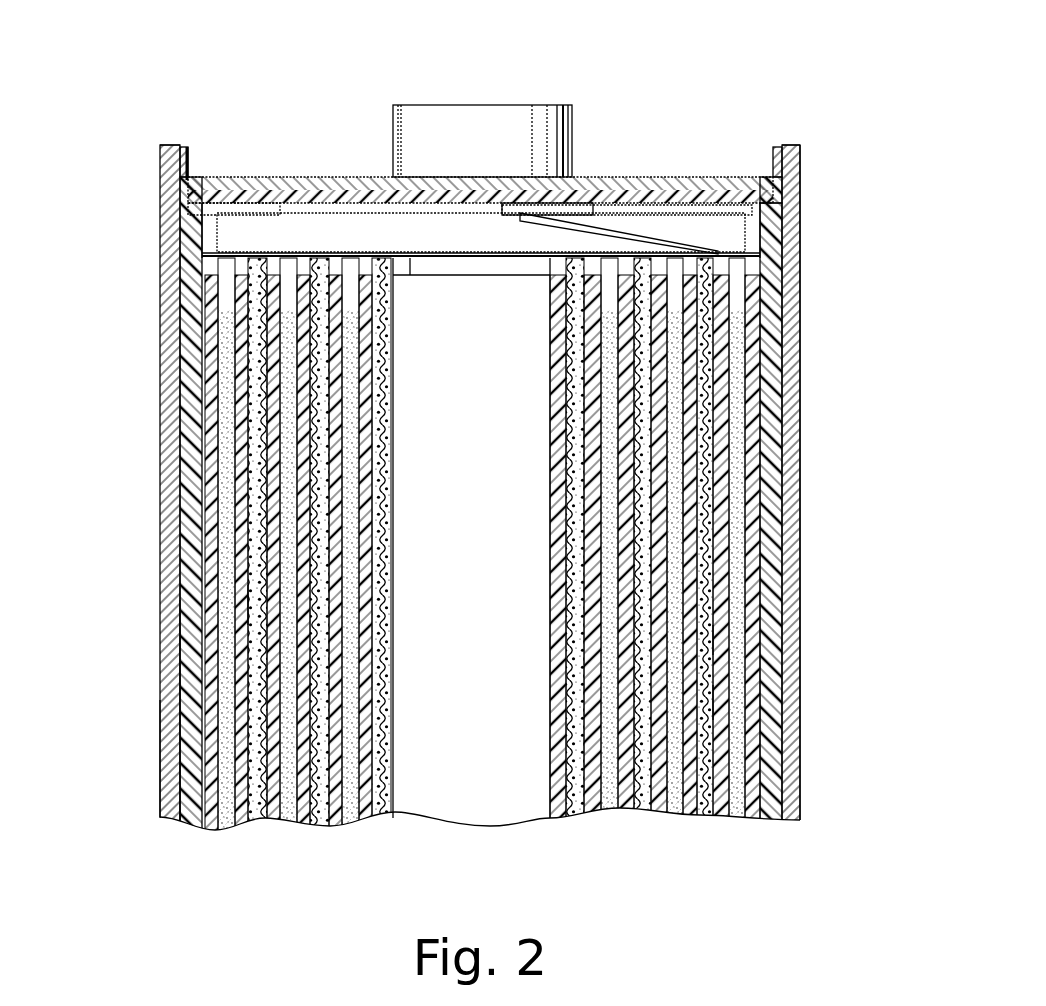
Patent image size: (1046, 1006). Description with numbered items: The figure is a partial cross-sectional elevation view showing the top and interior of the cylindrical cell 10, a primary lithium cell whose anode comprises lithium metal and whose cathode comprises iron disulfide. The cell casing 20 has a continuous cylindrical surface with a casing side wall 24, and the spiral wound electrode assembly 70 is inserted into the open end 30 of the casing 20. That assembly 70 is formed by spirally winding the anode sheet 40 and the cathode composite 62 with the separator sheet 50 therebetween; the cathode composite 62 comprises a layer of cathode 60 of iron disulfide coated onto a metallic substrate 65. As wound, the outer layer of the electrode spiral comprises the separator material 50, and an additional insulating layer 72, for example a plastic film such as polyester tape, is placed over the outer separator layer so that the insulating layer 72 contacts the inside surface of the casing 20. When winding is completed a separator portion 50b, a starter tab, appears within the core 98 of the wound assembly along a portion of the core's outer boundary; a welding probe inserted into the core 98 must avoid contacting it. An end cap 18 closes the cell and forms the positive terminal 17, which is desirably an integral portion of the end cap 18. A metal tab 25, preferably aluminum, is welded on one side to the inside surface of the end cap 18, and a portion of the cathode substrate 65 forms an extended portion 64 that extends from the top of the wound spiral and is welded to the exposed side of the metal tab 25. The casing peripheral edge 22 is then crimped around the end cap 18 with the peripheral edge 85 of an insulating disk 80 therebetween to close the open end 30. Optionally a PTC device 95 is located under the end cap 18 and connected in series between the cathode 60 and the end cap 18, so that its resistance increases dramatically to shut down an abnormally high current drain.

The cylindrical cell 10 is at (807, 331).
The positive terminal 17 is at (480, 105).
The end cap 18 is at (296, 177).
The cell casing 20 is at (160, 240).
The casing peripheral edge 22 is at (160, 152).
The casing side wall 24 is at (160, 765).
The metal tab 25 is at (700, 246).
The open end 30 is at (190, 178).
The anode sheet 40 is at (218, 457).
The separator sheet 50 is at (237, 535).
The separator portion 50b is at (548, 800).
The cathode 60 is at (715, 590).
The cathode composite 62 is at (245, 607).
The extended portion 64 is at (706, 270).
The metallic substrate 65 is at (713, 637).
The spiral wound electrode assembly 70 is at (182, 685).
The insulating layer 72 is at (185, 360).
The insulating disk 80 is at (778, 195).
The peripheral edge of insulating disk 85 is at (188, 147).
The PTC device 95 is at (620, 210).
The core 98 is at (456, 704).